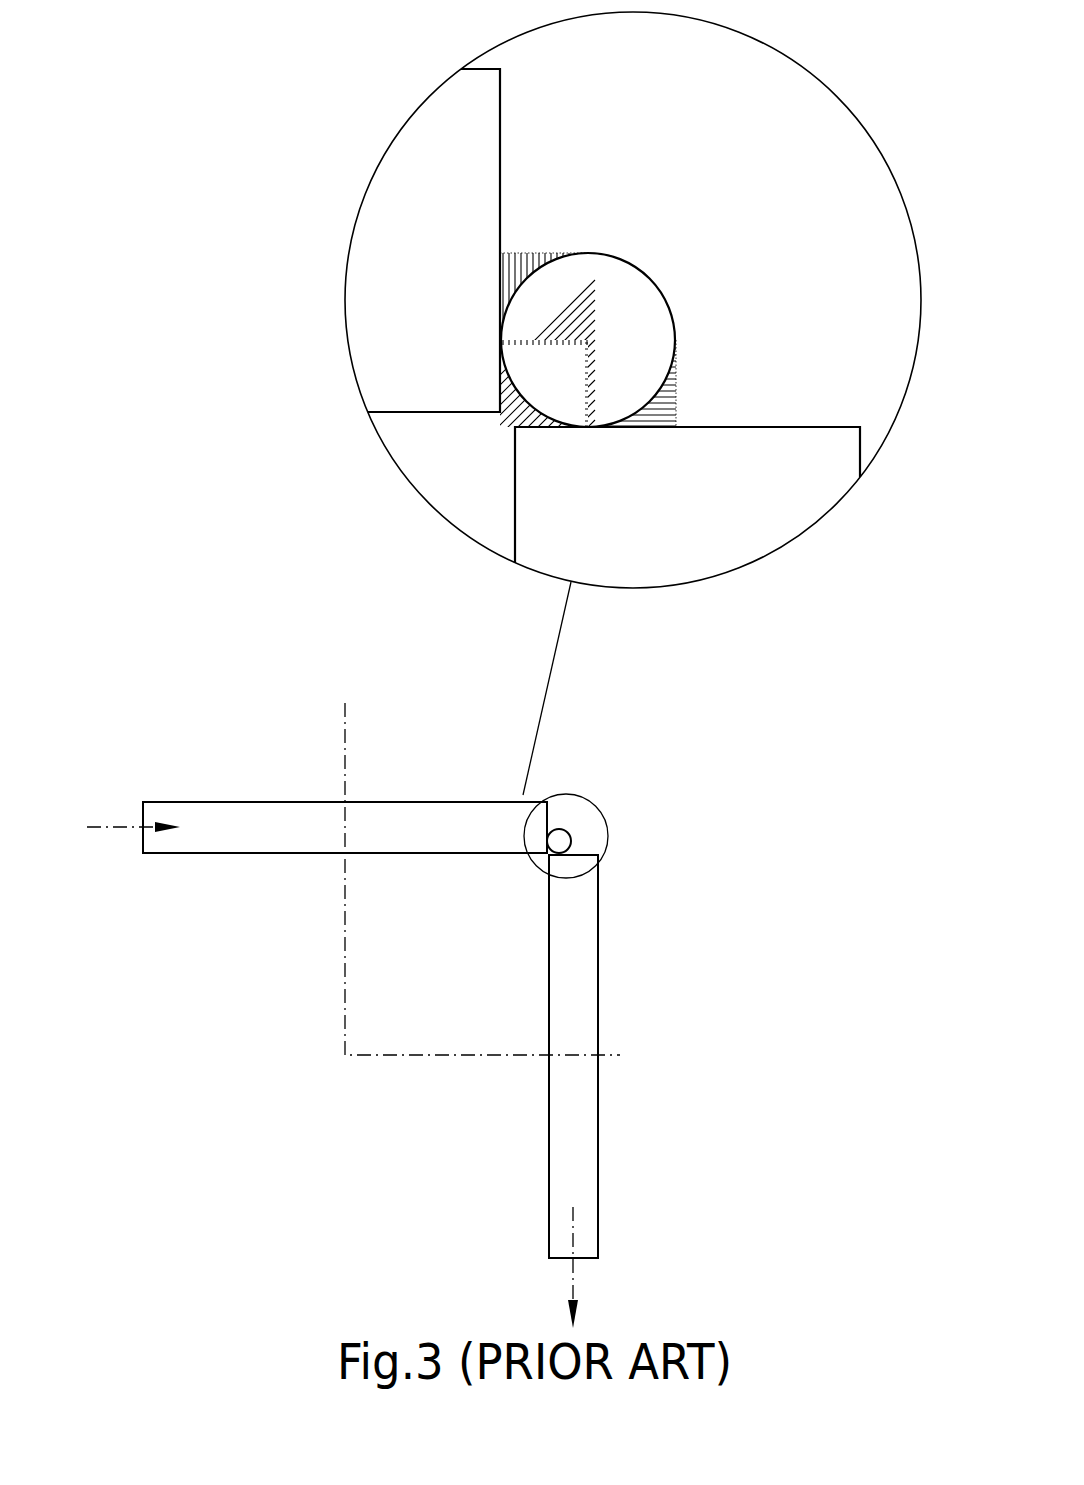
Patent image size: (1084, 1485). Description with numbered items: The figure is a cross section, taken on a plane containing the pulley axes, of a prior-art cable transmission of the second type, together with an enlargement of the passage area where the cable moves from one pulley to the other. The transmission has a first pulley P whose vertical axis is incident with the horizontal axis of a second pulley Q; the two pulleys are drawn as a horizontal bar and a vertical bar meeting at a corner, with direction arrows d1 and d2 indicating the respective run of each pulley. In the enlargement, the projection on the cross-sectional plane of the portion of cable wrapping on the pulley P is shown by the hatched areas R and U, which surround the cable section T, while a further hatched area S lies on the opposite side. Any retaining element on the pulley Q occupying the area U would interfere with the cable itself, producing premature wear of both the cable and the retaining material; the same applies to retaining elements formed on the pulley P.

The first pulley P is at (275, 838).
The second pulley Q is at (575, 1147).
The projection area R is at (524, 265).
The lower right gap region between ball and pipe wall S is at (663, 405).
The ball T is at (604, 326).
The projection area U is at (500, 398).
The flow direction in first pipe d1 is at (129, 816).
The flow direction in second pipe d2 is at (556, 1267).